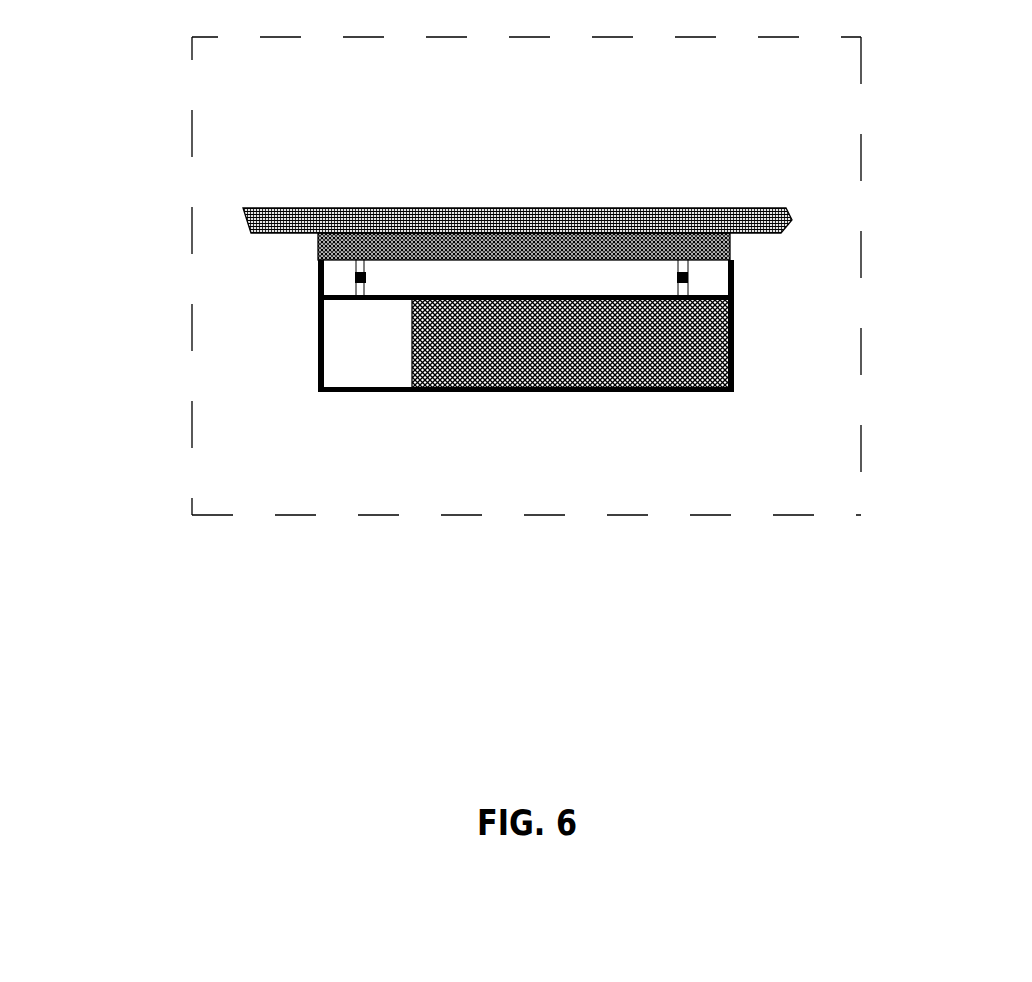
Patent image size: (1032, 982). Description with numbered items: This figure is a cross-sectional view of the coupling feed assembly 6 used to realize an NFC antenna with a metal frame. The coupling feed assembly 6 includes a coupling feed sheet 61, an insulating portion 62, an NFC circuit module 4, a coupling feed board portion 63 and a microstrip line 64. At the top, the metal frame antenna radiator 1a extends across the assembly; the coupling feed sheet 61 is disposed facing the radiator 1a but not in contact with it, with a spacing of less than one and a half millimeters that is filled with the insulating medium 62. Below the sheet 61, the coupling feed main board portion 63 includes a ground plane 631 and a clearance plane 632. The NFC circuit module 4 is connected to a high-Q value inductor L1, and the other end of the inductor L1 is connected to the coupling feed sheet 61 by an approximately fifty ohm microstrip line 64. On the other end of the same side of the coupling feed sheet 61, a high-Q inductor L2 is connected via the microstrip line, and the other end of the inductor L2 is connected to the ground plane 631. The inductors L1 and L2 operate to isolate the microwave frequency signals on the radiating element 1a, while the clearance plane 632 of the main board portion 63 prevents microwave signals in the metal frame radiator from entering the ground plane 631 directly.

The metal frame antenna radiator 1a is at (723, 210).
The insulating portion 62 is at (730, 245).
The coupling feed assembly 6 is at (315, 275).
The coupling feed sheet 61 is at (733, 254).
The coupling feed board portion 63 is at (582, 392).
The ground plane 631 is at (490, 392).
The clearance plane 632 is at (627, 282).
The microstrip line 64 is at (353, 307).
The NFC circuit module 4 is at (373, 345).
The high-Q value inductor L1 is at (360, 278).
The high-Q inductor L2 is at (688, 278).